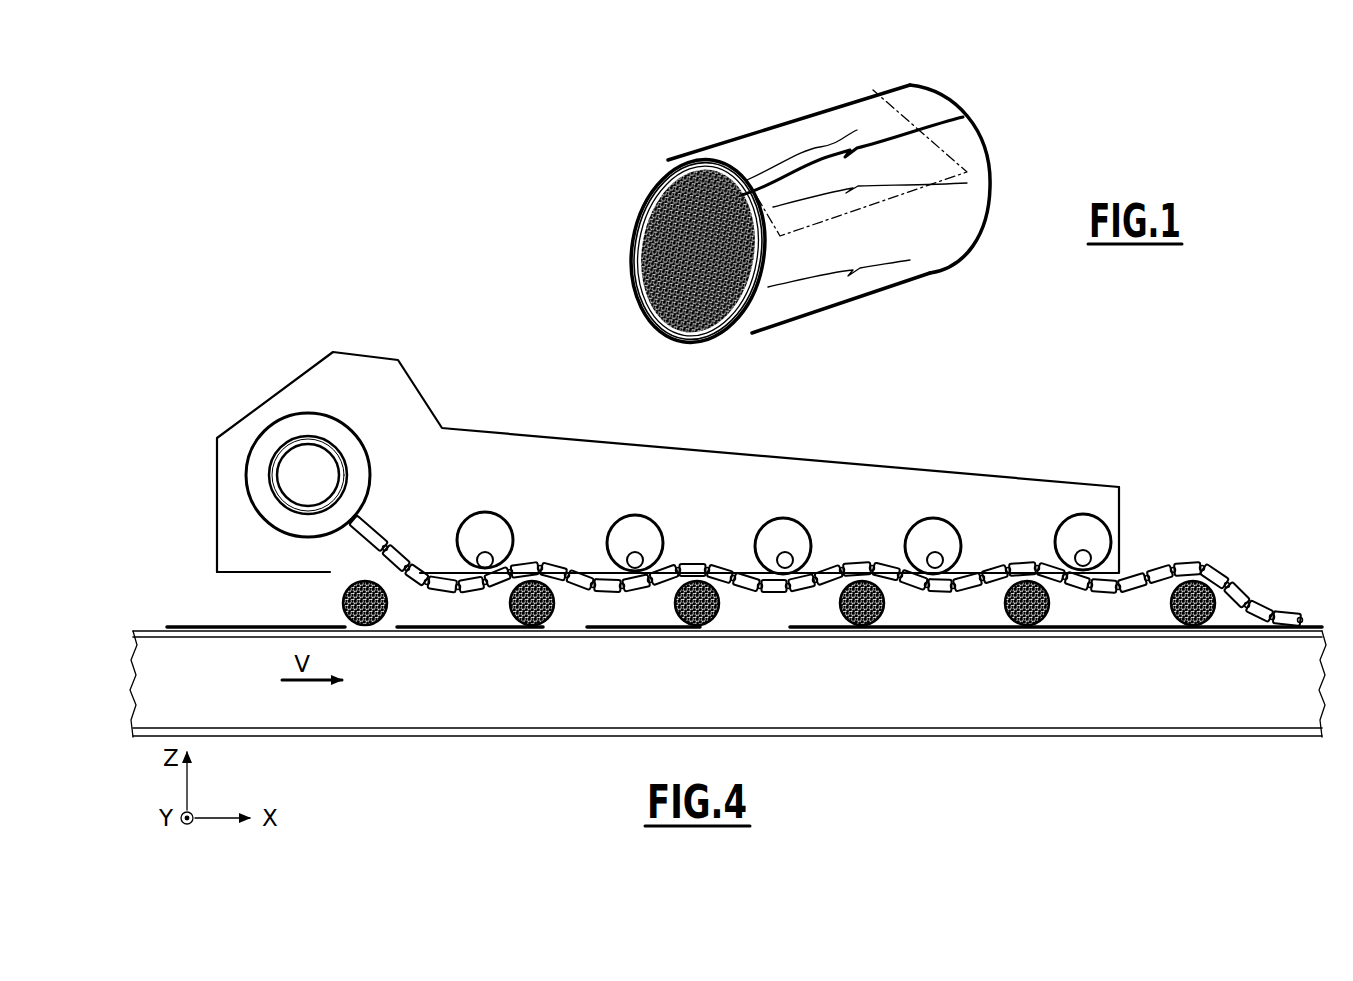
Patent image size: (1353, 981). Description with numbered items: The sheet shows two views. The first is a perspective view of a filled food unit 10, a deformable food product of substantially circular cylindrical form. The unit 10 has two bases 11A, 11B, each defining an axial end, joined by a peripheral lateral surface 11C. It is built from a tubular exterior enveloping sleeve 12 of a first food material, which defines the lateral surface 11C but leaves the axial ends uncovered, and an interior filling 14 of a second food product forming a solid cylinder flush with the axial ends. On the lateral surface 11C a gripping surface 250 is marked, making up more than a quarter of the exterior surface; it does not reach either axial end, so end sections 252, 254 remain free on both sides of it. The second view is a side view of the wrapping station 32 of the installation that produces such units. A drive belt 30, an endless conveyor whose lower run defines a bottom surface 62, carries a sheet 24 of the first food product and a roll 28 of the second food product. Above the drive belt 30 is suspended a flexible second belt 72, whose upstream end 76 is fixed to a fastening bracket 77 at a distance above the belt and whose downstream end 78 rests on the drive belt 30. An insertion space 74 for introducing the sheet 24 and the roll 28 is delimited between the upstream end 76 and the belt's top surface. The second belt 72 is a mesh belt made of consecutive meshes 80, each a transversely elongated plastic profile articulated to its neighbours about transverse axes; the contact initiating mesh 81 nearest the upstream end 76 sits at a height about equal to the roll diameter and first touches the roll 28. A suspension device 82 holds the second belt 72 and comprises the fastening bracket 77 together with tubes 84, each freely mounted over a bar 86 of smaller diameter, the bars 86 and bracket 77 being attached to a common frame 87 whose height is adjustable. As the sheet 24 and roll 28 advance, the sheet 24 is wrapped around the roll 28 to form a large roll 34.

In FIG. 1, the filled food unit 10 is at (626, 176).
In FIG. 1, the exterior enveloping sleeve 12 is at (724, 166).
In FIG. 1, the interior filling 14 is at (656, 240).
In FIG. 1, the base 11A is at (666, 300).
In FIG. 1, the base 11B is at (988, 160).
In FIG. 1, the peripheral lateral surface 11C is at (890, 292).
In FIG. 1, the gripping surface 250 is at (838, 124).
In FIG. 1, the end section 252 is at (705, 170).
In FIG. 1, the end section 254 is at (906, 88).
In FIG. 4, the sheet 24 is at (185, 624).
In FIG. 4, the roll 28 is at (367, 627).
In FIG. 4, the drive belt 30 is at (167, 633).
In FIG. 4, the wrapping station 32 is at (270, 349).
In FIG. 4, the large roll 34 is at (1032, 627).
In FIG. 4, the bottom surface 62 is at (392, 737).
In FIG. 4, the second belt 72 is at (700, 474).
In FIG. 4, the insertion space 74 is at (401, 610).
In FIG. 4, the upstream end 76 is at (352, 527).
In FIG. 4, the fastening bracket 77 is at (260, 404).
In FIG. 4, the downstream end 78 is at (1292, 614).
In FIG. 4, the mesh 80 is at (697, 565).
In FIG. 4, the contact initiating mesh 81 is at (418, 570).
In FIG. 4, the suspension device 82 is at (1240, 545).
In FIG. 4, the tube 84 is at (505, 525).
In FIG. 4, the bar 86 is at (480, 560).
In FIG. 4, the frame 87 is at (458, 446).